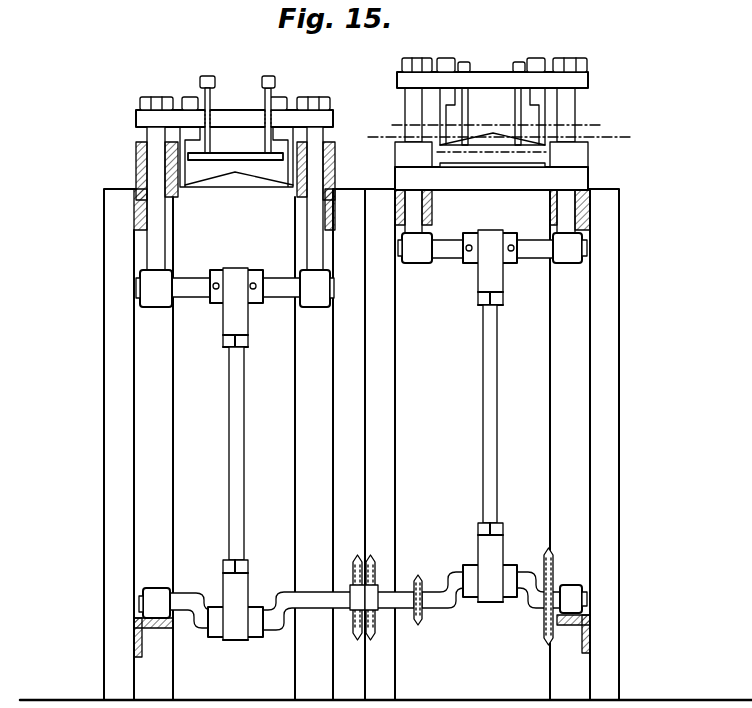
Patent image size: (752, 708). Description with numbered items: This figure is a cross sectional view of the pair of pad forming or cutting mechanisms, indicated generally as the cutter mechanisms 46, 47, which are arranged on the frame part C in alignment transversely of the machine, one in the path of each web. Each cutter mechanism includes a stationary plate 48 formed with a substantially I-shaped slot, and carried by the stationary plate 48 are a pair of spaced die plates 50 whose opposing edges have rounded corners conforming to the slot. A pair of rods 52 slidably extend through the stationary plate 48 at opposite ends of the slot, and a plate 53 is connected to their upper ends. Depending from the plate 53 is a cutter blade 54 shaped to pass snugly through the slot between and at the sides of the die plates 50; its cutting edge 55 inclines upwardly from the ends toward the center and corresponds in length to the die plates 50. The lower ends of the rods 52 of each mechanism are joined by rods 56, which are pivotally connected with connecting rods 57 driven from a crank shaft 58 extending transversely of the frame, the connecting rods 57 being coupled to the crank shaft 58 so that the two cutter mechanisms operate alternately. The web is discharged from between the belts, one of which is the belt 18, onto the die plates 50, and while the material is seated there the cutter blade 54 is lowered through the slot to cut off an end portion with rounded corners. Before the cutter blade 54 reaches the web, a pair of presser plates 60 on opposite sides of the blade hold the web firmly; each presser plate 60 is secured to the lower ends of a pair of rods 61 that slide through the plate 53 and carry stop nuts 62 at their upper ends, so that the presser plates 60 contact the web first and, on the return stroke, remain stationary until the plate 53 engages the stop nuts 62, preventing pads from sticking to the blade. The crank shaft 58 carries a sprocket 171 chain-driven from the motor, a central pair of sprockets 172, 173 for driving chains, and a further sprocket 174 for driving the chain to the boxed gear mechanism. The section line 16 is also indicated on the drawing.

The section line 16 is at (498, 124).
The belt 18 is at (500, 139).
The cutter mechanism 46 is at (472, 71).
The cutter mechanism 47 is at (233, 110).
The stationary plate 48 is at (473, 181).
The die plates 50 is at (513, 167).
The rods 52 is at (174, 237).
The plate 53 is at (331, 112).
The cutter blade 54 is at (268, 180).
The cutting edge 55 is at (222, 180).
The rods 56 is at (281, 287).
The connecting rods 57 is at (251, 372).
The crank shaft 58 is at (310, 600).
The presser plates 60 is at (232, 153).
The rods 61 is at (213, 97).
The stop nuts 62 is at (270, 78).
The sprocket 171 is at (549, 550).
The sprocket 172 is at (358, 560).
The sprocket 173 is at (372, 560).
The sprocket 174 is at (418, 577).
The frame part C is at (137, 207).